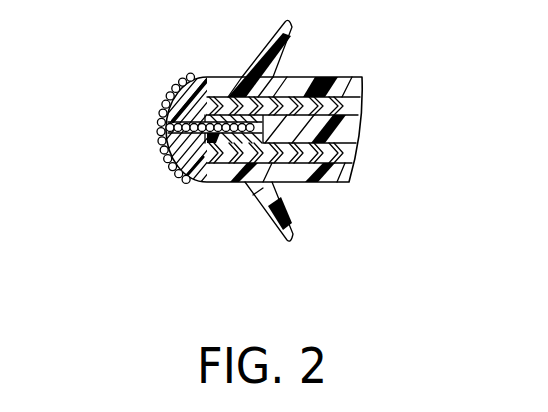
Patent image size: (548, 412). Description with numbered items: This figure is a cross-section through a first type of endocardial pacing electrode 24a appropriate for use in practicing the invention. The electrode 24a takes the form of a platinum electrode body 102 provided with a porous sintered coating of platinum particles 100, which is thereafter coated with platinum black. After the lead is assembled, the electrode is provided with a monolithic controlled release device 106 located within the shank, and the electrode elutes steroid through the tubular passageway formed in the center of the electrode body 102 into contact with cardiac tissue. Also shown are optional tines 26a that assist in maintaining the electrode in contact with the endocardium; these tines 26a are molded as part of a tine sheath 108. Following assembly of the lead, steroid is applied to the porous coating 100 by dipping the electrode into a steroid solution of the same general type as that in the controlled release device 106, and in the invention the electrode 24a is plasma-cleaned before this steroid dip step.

The electrode 24a is at (118, 111).
The tines 26a is at (288, 45).
The porous sintered coating of platinum particles 100 is at (184, 169).
The platinum electrode body 102 is at (189, 183).
The monolithic controlled release device 106 is at (352, 125).
The tine sheath 108 is at (307, 178).